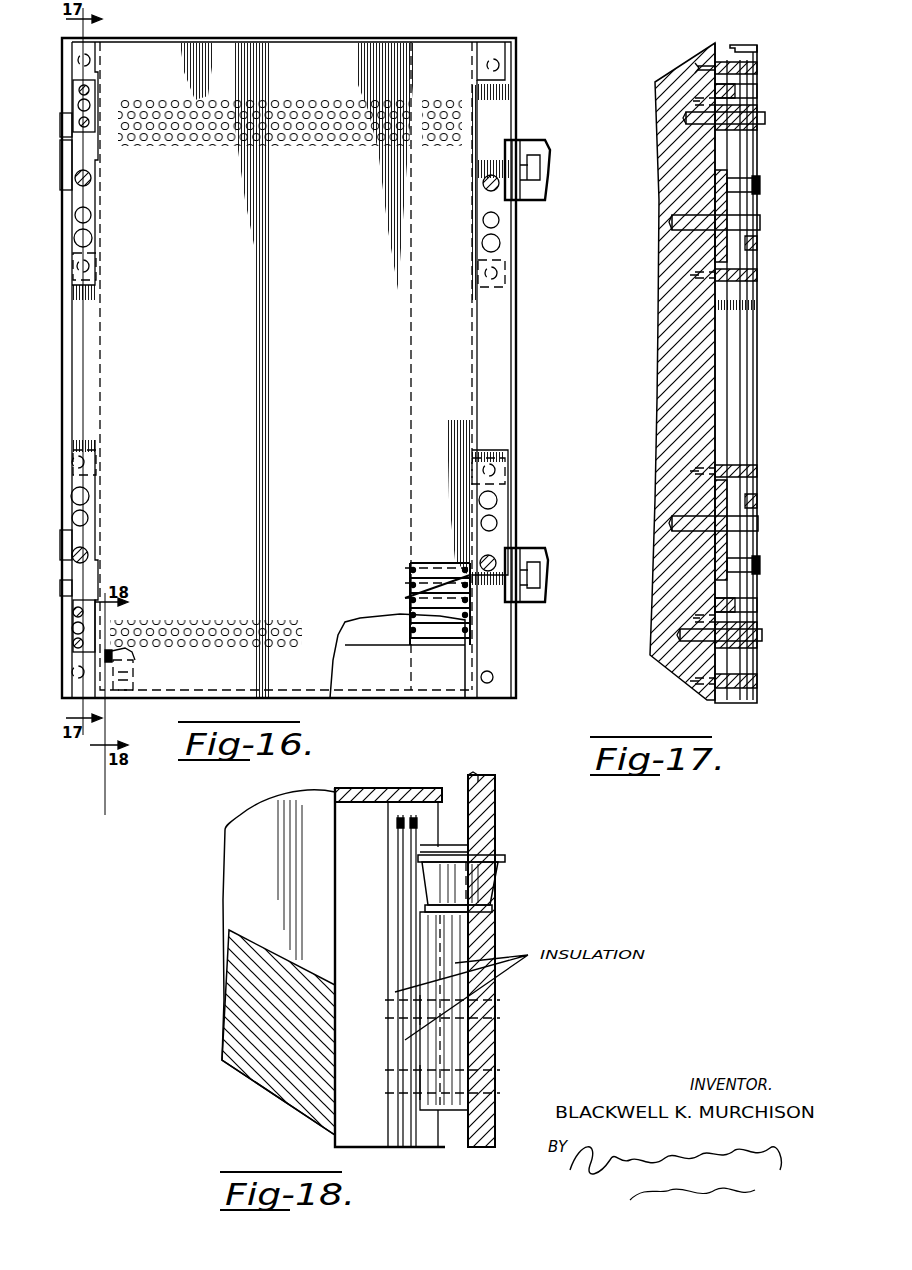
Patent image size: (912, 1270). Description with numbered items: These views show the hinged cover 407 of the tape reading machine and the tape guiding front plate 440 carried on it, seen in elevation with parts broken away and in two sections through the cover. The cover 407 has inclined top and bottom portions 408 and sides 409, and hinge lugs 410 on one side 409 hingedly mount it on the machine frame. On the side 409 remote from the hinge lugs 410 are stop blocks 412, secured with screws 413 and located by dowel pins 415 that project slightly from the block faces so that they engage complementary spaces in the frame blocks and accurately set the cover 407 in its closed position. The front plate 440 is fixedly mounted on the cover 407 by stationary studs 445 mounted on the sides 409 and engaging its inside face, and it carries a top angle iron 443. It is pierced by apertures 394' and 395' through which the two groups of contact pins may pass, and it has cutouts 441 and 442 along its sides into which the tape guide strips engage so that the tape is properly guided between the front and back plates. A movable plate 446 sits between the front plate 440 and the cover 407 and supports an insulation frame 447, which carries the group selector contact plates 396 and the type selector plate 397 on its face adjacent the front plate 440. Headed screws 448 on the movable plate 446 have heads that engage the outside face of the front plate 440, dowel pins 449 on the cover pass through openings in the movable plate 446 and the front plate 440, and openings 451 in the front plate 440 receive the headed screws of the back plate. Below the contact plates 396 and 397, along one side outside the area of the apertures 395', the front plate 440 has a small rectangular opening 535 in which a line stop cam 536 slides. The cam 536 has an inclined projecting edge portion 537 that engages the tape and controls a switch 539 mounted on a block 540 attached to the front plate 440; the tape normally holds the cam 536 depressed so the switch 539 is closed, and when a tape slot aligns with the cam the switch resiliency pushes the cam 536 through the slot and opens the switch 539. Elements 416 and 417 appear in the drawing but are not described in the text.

In FIG. 16, the tape guiding front plate 440 is at (215, 48).
In FIG. 17, the tape guiding front plate 440 is at (753, 383).
In FIG. 18, the tape guiding front plate 440 is at (497, 782).
In FIG. 16, the apertures 395' is at (260, 361).
In FIG. 16, the apertures 394' is at (447, 110).
In FIG. 16, the cutout 441 is at (100, 92).
In FIG. 16, the stop blocks 412 is at (78, 90).
In FIG. 17, the stop blocks 412 is at (757, 90).
In FIG. 16, the dowel pins 415 is at (78, 105).
In FIG. 17, the dowel pins 415 is at (765, 118).
In FIG. 16, the screws 413 is at (79, 122).
In FIG. 17, the screws 413 is at (705, 98).
In FIG. 16, the tab 417 is at (66, 148).
In FIG. 16, the tab 416 is at (62, 172).
In FIG. 16, the headed screws 448 is at (92, 176).
In FIG. 17, the headed screws 448 is at (760, 185).
In FIG. 16, the dowel pins 449 is at (91, 213).
In FIG. 17, the dowel pins 449 is at (760, 222).
In FIG. 16, the openings 451 is at (88, 240).
In FIG. 17, the openings 451 is at (757, 243).
In FIG. 16, the stationary studs 445 is at (92, 58).
In FIG. 17, the stationary studs 445 is at (757, 68).
In FIG. 16, the hinge lugs 410 is at (527, 140).
In FIG. 16, the cutout 442 is at (97, 340).
In FIG. 17, the cutout 442 is at (753, 410).
In FIG. 16, the cover 407 is at (62, 345).
In FIG. 17, the cover 407 is at (656, 392).
In FIG. 18, the cover 407 is at (258, 1094).
In FIG. 16, the group selector contact plates 396 is at (428, 638).
In FIG. 16, the type selector plate 397 is at (360, 650).
In FIG. 17, the type selector plate 397 is at (745, 340).
In FIG. 18, the type selector plate 397 is at (440, 792).
In FIG. 16, the line stop cam 536 is at (112, 655).
In FIG. 18, the line stop cam 536 is at (485, 885).
In FIG. 16, the rectangular opening 535 is at (118, 652).
In FIG. 18, the rectangular opening 535 is at (492, 908).
In FIG. 16, the switch 539 is at (133, 676).
In FIG. 18, the switch 539 is at (400, 883).
In FIG. 17, the sides 409 is at (658, 358).
In FIG. 18, the sides 409 is at (228, 848).
In FIG. 17, the inclined top and bottom portions 408 is at (680, 672).
In FIG. 18, the inclined top and bottom portions 408 is at (255, 1062).
In FIG. 17, the top angle iron 443 is at (742, 44).
In FIG. 17, the movable plate 446 is at (720, 305).
In FIG. 18, the movable plate 446 is at (378, 775).
In FIG. 17, the insulation frame 447 is at (735, 322).
In FIG. 18, the insulation frame 447 is at (430, 777).
In FIG. 18, the inclined projecting edge portion 537 is at (500, 862).
In FIG. 18, the block 540 is at (462, 1042).